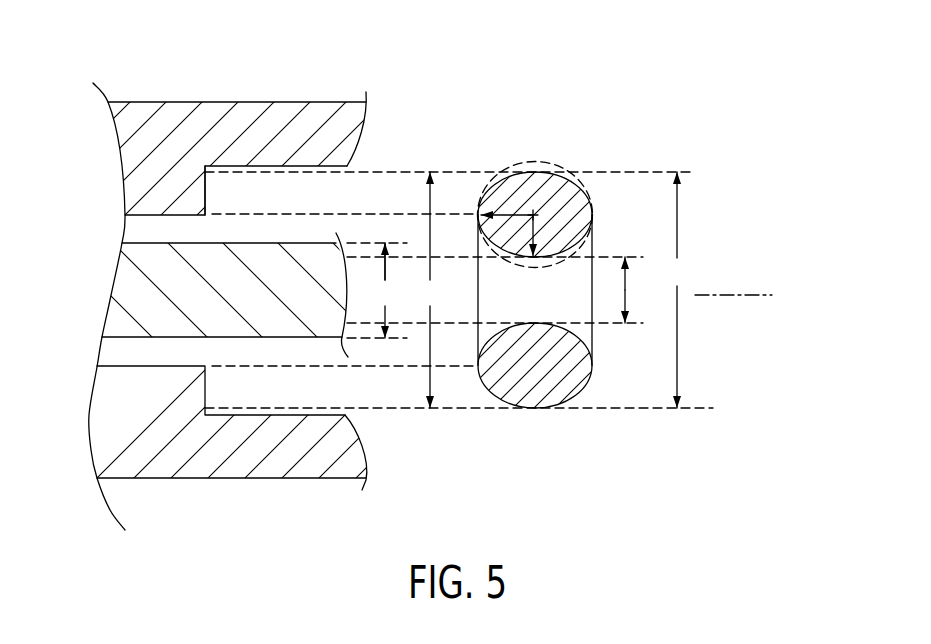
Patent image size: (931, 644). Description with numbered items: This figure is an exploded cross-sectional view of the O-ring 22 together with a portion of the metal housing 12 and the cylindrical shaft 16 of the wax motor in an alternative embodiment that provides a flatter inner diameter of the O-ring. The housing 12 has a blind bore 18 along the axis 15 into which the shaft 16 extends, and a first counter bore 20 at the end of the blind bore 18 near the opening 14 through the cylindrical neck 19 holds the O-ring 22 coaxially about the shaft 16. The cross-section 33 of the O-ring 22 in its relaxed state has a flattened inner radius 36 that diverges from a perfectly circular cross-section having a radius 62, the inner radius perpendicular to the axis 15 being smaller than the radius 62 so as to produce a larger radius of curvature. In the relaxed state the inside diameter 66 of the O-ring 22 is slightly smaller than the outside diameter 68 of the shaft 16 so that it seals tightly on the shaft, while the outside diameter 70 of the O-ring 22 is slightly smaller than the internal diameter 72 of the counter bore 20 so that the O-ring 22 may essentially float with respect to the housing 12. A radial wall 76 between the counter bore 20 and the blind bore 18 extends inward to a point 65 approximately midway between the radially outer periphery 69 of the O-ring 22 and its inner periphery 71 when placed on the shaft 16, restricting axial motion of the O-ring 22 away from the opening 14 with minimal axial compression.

The metal housing 12 is at (247, 118).
The opening 14 is at (463, 480).
The axis 15 is at (732, 295).
The cylindrical shaft 16 is at (142, 296).
The blind bore 18 is at (120, 367).
The cylindrical neck 19 is at (307, 509).
The first counter bore 20 is at (312, 166).
The O-ring 22 is at (603, 136).
The cross-section 33 is at (585, 212).
The flattened inner radius 36 is at (492, 247).
The radius 62 is at (509, 212).
The point 65 is at (236, 214).
The inside diameter 66 is at (630, 292).
The outside diameter 68 is at (377, 290).
The radially outer periphery 69 is at (532, 170).
The outside diameter 70 is at (677, 290).
The inner periphery 71 is at (536, 323).
The internal diameter 72 is at (430, 290).
The radial wall 76 is at (203, 188).